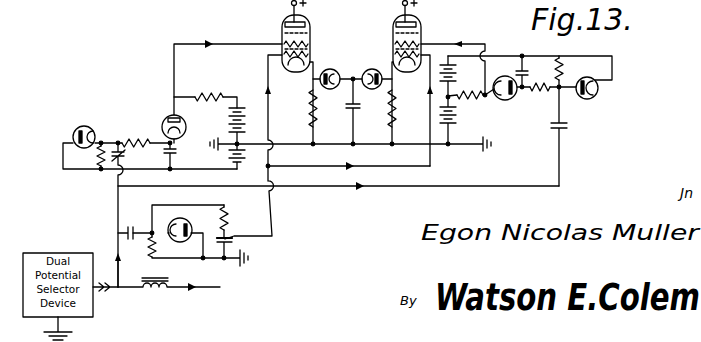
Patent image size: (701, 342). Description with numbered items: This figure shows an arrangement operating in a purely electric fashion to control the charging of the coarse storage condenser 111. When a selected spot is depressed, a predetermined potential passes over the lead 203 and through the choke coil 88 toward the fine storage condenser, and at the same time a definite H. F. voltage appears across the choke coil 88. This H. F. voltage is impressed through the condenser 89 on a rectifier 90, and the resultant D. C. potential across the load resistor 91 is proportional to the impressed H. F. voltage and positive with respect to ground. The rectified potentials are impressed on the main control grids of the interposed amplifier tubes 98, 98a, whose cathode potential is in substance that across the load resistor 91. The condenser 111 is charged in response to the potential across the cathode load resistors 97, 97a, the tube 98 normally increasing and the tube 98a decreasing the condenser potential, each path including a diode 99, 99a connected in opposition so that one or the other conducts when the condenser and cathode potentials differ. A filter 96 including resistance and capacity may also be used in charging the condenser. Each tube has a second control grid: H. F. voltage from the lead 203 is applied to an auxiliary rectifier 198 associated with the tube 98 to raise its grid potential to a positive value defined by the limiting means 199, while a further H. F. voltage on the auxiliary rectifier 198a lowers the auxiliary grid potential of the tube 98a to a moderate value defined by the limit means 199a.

The auxiliary rectifier 198 is at (87, 124).
The limiting means 199 is at (170, 114).
The amplifier tube 98 is at (310, 30).
The amplifier tube 98a is at (393, 32).
The diode 99 is at (330, 68).
The diode 99a is at (372, 68).
The cathode load resistor 97 is at (310, 108).
The cathode load resistor 97a is at (395, 108).
The coarse storage condenser 111 is at (355, 108).
The limit means 199a is at (505, 100).
The auxiliary rectifier 198a is at (588, 99).
The condenser 89 is at (132, 226).
The rectifier 90 is at (177, 242).
The load resistor 91 is at (148, 250).
The filter 96 is at (229, 234).
The choke coil 88 is at (160, 292).
The lead 203 is at (118, 292).